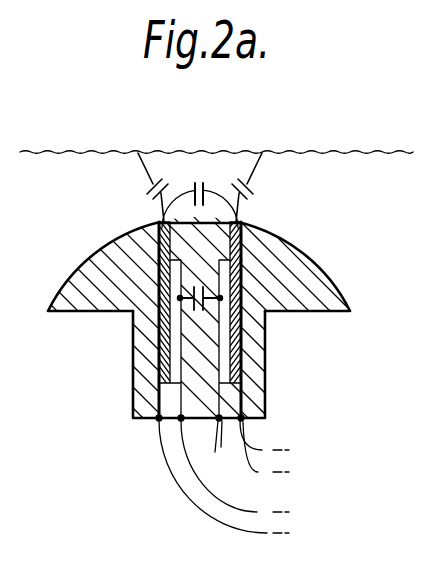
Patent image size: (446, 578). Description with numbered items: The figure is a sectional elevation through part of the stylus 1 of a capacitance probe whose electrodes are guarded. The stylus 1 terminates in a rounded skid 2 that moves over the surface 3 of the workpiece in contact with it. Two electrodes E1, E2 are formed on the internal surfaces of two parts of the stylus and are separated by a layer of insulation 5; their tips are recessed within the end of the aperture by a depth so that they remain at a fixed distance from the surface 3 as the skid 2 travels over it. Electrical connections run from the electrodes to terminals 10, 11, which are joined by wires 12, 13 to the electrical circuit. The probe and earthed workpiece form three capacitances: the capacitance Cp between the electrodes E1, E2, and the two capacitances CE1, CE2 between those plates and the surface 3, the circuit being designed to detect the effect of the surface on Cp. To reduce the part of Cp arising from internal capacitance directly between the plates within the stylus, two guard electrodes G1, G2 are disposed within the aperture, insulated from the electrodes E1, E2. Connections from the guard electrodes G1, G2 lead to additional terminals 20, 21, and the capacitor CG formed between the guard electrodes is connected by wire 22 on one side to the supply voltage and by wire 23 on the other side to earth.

The stylus 1 is at (253, 373).
The rounded skid 2 is at (73, 285).
The surface of the workpiece 3 is at (312, 151).
The layer of insulation 5 is at (170, 392).
The terminal 10 is at (180, 422).
The terminal 11 is at (214, 449).
The wire 12 is at (218, 498).
The wire 13 is at (265, 472).
The additional terminal 20 is at (158, 422).
The additional terminal 21 is at (243, 418).
The wire 22 is at (178, 483).
The wire 23 is at (260, 450).
The electrode E1 is at (168, 240).
The electrode E2 is at (234, 250).
The guard electrode G1 is at (167, 342).
The guard electrode G2 is at (238, 333).
The capacitance between electrode E1 and the workpiece surface CE1 is at (147, 184).
The capacitance between electrode E2 and the workpiece surface CE2 is at (252, 185).
The capacitance between the two electrodes Cp is at (195, 195).
The capacitor formed between the guard electrodes CG is at (180, 298).